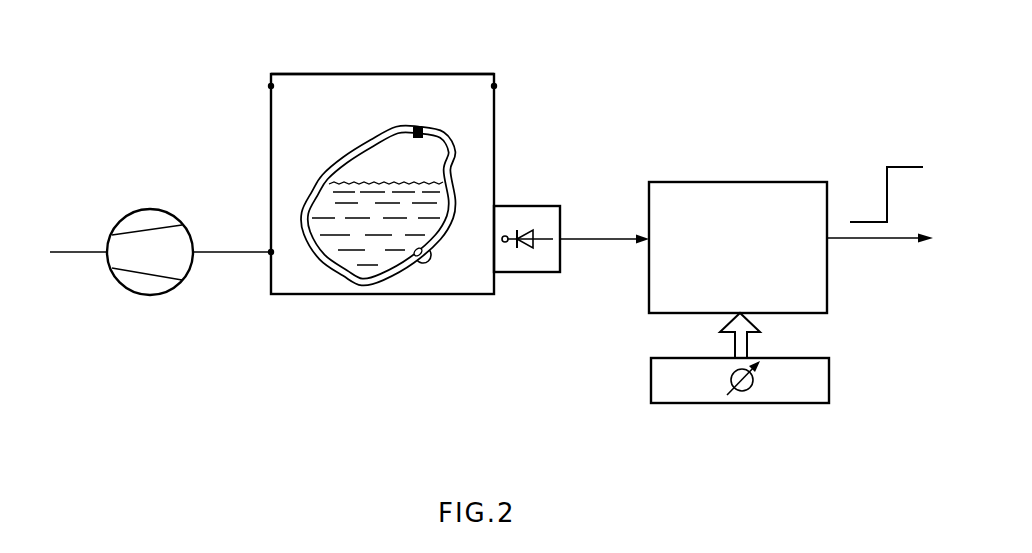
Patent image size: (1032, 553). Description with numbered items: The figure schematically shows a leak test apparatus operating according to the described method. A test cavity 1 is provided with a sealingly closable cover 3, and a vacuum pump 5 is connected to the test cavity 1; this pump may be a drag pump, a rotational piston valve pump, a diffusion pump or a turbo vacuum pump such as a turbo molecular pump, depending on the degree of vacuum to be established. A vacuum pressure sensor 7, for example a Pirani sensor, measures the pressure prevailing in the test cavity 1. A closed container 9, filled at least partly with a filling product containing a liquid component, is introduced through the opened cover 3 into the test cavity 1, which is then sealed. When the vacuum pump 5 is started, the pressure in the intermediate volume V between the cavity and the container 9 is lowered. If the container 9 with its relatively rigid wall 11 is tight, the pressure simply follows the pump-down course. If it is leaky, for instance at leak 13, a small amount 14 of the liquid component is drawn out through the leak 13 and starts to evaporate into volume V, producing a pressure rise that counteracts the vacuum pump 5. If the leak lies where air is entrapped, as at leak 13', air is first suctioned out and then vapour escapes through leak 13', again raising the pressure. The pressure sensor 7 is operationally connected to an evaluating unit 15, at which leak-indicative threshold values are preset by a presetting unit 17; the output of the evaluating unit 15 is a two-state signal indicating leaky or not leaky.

The test cavity 1 is at (495, 118).
The cover 3 is at (393, 73).
The vacuum pump 5 is at (142, 295).
The vacuum pressure sensor 7 is at (533, 272).
The closed container 9 is at (348, 272).
The wall 11 is at (315, 180).
The leak 13 is at (392, 304).
The leak 13' is at (429, 111).
The amount of liquid component 14 is at (432, 260).
The evaluating unit 15 is at (735, 182).
The presetting unit 17 is at (695, 403).